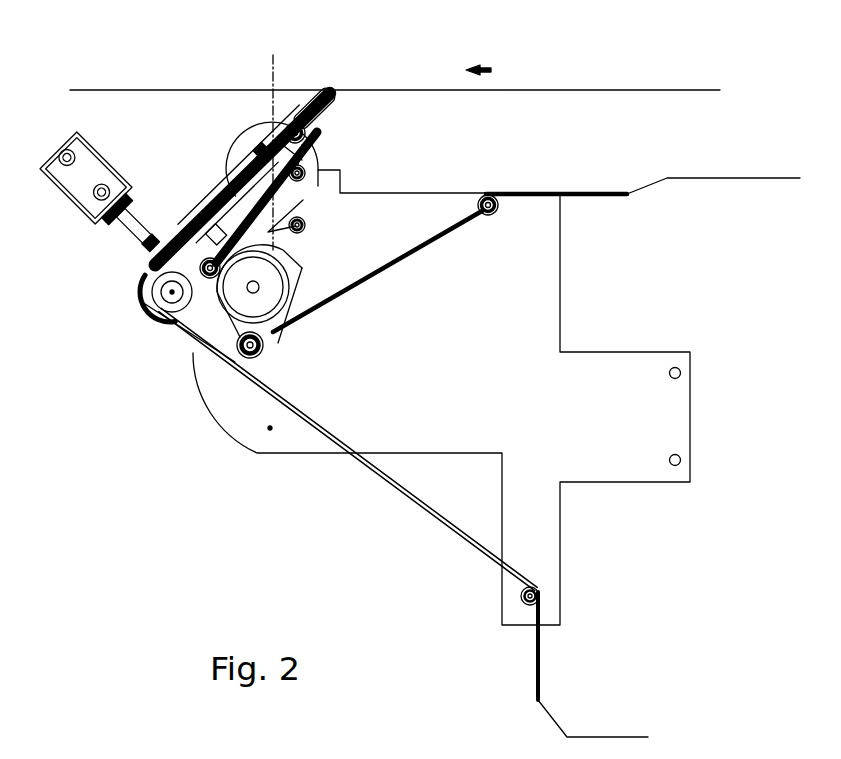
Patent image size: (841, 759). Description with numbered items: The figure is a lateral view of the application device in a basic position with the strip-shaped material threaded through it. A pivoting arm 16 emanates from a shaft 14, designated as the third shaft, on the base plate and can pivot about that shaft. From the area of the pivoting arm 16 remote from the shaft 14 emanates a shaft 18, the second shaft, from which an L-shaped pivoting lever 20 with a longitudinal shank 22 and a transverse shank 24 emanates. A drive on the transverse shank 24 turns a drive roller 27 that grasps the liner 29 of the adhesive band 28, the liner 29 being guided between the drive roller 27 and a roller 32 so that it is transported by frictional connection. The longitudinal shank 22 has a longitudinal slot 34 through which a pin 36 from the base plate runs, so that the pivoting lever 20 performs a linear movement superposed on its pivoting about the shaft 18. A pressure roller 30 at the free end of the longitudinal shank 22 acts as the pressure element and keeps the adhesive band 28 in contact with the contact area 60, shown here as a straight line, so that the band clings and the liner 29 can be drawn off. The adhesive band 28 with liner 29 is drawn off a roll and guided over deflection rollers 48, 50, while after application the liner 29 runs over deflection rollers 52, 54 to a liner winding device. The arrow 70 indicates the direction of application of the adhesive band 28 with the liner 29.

The shaft 14 is at (297, 199).
The pivoting arm 16 is at (302, 230).
The shaft 18 is at (139, 274).
The pivoting lever 20 is at (218, 187).
The longitudinal shank 22 is at (233, 158).
The transverse shank 24 is at (304, 315).
The drive roller 27 is at (302, 291).
The adhesive band 28 is at (428, 522).
The liner 29 is at (536, 234).
The pressure roller 30 is at (326, 82).
The roller 32 is at (237, 179).
The longitudinal slot 34 is at (270, 132).
The pin 36 is at (230, 86).
The deflection roller 48 is at (479, 625).
The deflection roller 50 is at (133, 315).
The deflection roller 52 is at (273, 363).
The deflection roller 54 is at (505, 221).
The contact area 60 is at (395, 61).
The arrow 70 is at (497, 42).